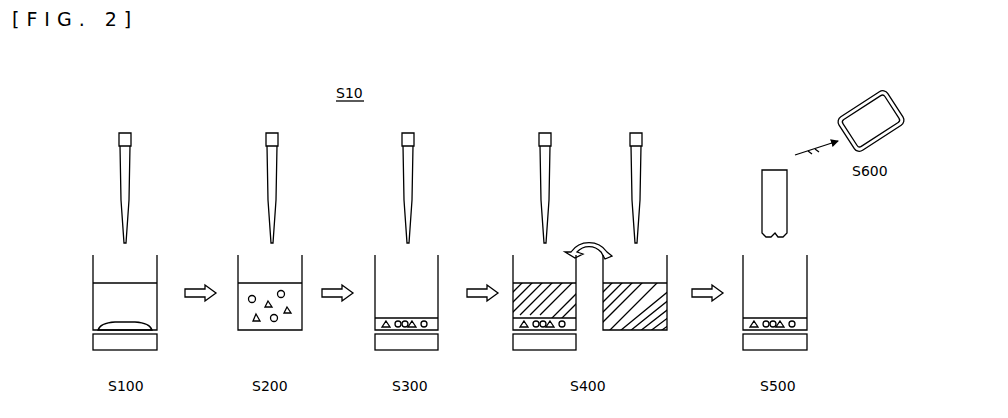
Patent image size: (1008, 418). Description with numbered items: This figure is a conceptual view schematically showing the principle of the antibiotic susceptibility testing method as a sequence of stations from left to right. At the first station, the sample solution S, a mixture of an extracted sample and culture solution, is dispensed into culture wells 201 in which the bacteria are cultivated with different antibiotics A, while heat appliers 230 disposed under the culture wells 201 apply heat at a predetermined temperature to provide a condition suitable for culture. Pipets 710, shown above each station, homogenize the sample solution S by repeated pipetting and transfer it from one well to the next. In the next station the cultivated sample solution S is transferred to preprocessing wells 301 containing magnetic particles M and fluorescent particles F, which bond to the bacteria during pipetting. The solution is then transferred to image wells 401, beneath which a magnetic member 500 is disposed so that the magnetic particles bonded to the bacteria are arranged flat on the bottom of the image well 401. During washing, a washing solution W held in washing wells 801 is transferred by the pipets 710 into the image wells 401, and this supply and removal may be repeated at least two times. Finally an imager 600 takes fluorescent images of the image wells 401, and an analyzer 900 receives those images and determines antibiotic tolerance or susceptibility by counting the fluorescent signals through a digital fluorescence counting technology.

The culture well 201 is at (93, 275).
The preprocessing well 301 is at (238, 275).
The image well 401 is at (375, 275).
The washing well 801 is at (667, 272).
The pipet 710 is at (122, 190).
The heat applier 230 is at (93, 348).
The magnetic member 500 is at (375, 346).
The imager 600 is at (770, 205).
The analyzer 900 is at (858, 112).
The sample solution S is at (108, 305).
The antibiotic A is at (93, 332).
The fluorescent particle F is at (256, 323).
The magnetic particle M is at (276, 323).
The washing solution W is at (522, 305).